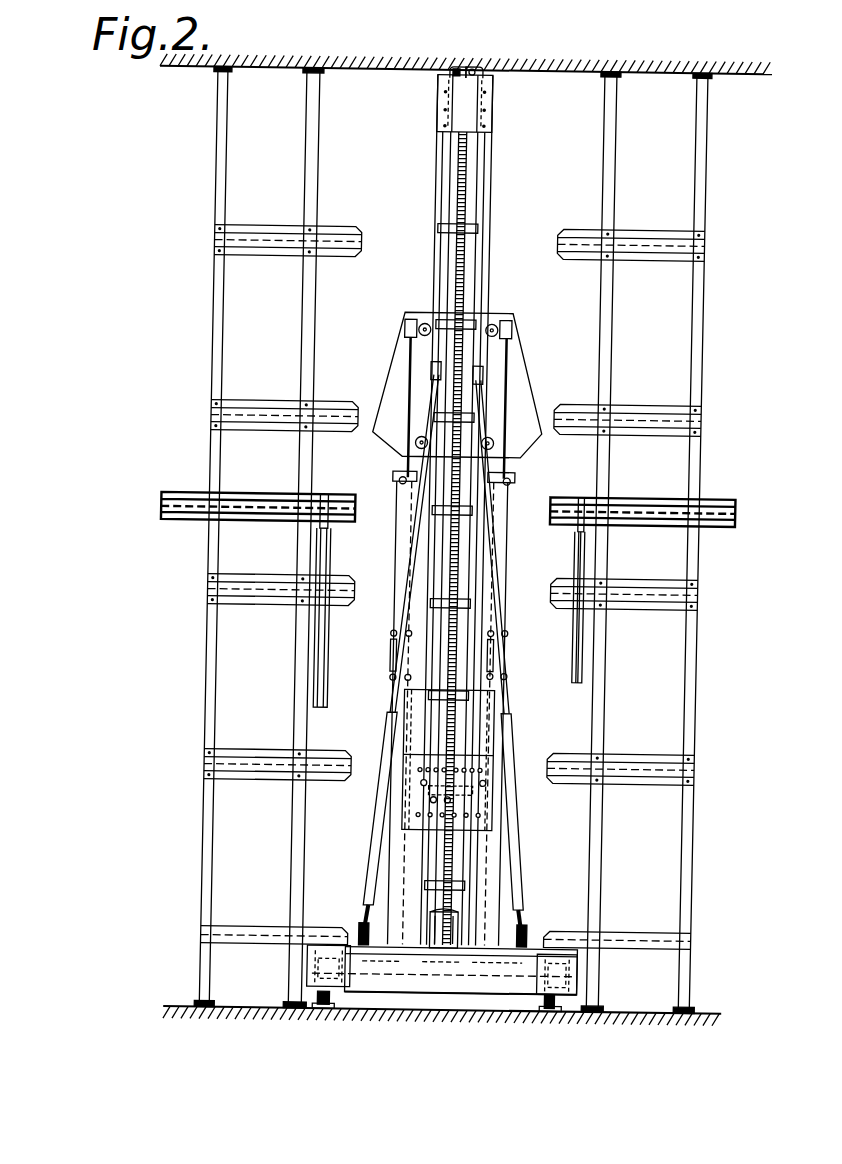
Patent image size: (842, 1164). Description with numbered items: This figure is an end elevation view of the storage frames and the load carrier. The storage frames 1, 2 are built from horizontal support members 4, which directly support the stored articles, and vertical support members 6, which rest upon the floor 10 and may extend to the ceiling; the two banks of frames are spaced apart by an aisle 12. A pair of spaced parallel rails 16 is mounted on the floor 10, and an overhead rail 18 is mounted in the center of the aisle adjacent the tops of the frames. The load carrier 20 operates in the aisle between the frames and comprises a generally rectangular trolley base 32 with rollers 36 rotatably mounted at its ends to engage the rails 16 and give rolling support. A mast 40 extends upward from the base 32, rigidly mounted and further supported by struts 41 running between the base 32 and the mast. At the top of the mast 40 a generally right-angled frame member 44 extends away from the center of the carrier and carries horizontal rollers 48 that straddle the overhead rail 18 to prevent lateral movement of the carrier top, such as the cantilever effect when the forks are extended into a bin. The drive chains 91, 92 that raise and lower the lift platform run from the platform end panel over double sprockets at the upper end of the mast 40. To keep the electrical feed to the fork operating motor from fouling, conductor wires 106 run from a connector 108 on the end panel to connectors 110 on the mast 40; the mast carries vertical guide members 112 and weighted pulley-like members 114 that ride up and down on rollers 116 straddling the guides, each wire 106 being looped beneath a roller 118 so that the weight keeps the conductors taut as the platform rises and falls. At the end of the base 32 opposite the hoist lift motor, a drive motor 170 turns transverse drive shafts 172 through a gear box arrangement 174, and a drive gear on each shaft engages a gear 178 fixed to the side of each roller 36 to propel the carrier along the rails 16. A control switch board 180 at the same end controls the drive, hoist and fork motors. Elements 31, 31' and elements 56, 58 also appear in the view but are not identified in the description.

The storage frame 1 is at (204, 160).
The storage frame 2 is at (720, 172).
The horizontal support member 4 is at (640, 262).
The vertical support member 6 is at (318, 154).
The floor 10 is at (266, 994).
The aisle 12 is at (568, 84).
The parallel rails 16 is at (332, 1010).
The overhead rail 18 is at (468, 74).
The load carrier 20 is at (518, 725).
The hanger bar 31 is at (449, 619).
The lower bracket 31' is at (589, 974).
The trolley base 32 is at (531, 944).
The rollers 36 is at (320, 1006).
The mast 40 is at (491, 215).
The struts 41 is at (376, 851).
The right angled frame member 44 is at (437, 93).
The horizontal rollers 48 is at (488, 73).
The upper pulley 56 is at (426, 325).
The lower pulley 58 is at (418, 444).
The drive chain 91 is at (467, 178).
The drive chain 92 is at (452, 188).
The conductor wires 106 is at (410, 355).
The connector 108 is at (514, 327).
The connectors 110 is at (396, 478).
The vertical guide members 112 is at (398, 606).
The weighted pulley-like members 114 is at (401, 668).
The rollers 116 is at (396, 679).
The roller 118 is at (398, 637).
The drive motor 170 is at (456, 936).
The transverse drive shafts 172 is at (392, 990).
The gear box arrangement 174 is at (443, 995).
The gear 178 is at (340, 994).
The control switch board 180 is at (413, 796).